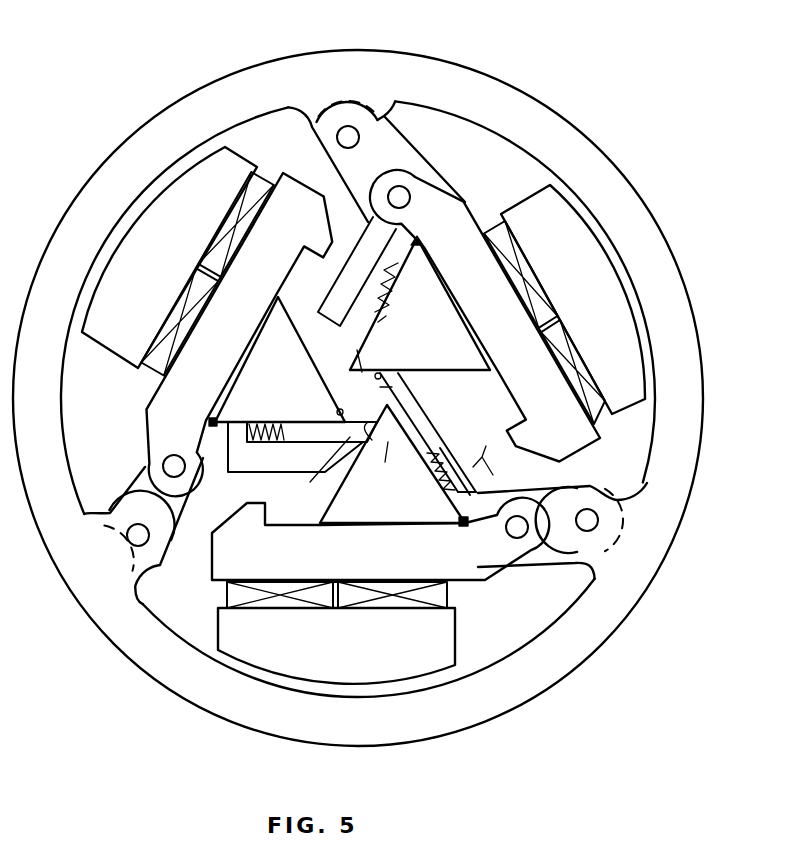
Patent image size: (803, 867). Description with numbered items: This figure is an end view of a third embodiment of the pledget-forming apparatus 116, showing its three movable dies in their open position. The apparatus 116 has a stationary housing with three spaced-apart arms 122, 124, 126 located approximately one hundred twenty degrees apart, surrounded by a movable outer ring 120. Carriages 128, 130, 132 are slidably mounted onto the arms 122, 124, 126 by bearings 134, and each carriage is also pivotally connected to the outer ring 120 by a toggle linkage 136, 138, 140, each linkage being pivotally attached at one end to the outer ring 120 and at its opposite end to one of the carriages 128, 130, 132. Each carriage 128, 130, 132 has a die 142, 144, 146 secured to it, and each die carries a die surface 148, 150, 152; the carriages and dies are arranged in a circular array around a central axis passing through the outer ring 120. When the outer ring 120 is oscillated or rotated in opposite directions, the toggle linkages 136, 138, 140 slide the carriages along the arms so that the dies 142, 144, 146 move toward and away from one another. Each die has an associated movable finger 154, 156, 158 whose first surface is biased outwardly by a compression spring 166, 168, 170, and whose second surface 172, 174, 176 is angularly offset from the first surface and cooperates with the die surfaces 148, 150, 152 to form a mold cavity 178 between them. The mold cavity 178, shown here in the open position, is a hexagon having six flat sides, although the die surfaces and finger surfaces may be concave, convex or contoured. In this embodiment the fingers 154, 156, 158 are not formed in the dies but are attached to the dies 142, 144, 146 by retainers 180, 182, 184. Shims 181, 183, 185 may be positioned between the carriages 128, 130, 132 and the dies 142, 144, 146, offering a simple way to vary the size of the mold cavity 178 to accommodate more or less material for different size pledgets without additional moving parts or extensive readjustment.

The apparatus 116 is at (588, 58).
The outer ring 120 is at (605, 172).
The arm 122 is at (135, 265).
The arm 124 is at (565, 307).
The arm 126 is at (323, 647).
The carriage 128 is at (220, 317).
The carriage 130 is at (490, 350).
The carriage 132 is at (323, 557).
The bearings 134 is at (262, 182).
The toggle linkage 136 is at (130, 480).
The toggle linkage 138 is at (392, 146).
The toggle linkage 140 is at (544, 552).
The die 142 is at (257, 373).
The die 144 is at (425, 358).
The die 146 is at (353, 505).
The die surface 148 is at (337, 398).
The die surface 150 is at (380, 377).
The die surface 152 is at (388, 442).
The movable finger 154 is at (308, 469).
The movable finger 156 is at (375, 320).
The movable finger 158 is at (426, 483).
The compression spring 166 is at (295, 447).
The compression spring 168 is at (403, 286).
The compression spring 170 is at (445, 455).
The second surface 172 is at (376, 463).
The second surface 174 is at (357, 350).
The second surface 176 is at (400, 410).
The mold cavity 178 is at (383, 388).
The retainer 180 is at (285, 462).
The shim 181 is at (214, 416).
The retainer 182 is at (352, 284).
The shim 183 is at (424, 243).
The retainer 184 is at (486, 462).
The shim 185 is at (458, 527).